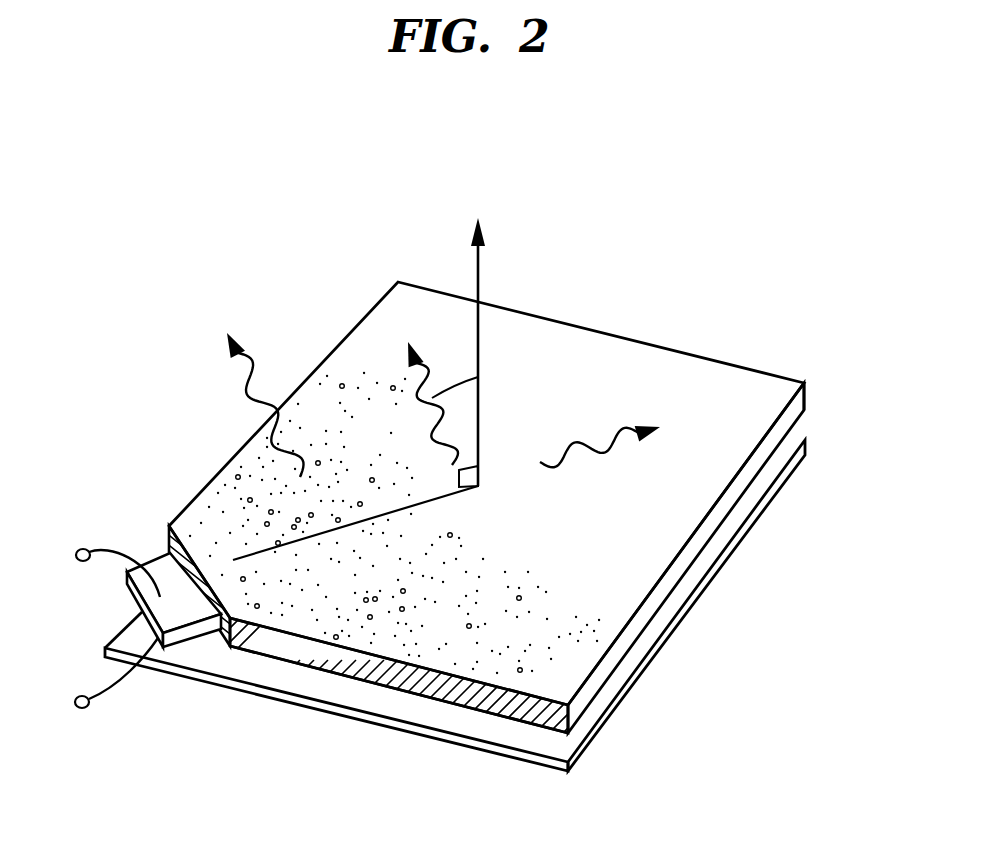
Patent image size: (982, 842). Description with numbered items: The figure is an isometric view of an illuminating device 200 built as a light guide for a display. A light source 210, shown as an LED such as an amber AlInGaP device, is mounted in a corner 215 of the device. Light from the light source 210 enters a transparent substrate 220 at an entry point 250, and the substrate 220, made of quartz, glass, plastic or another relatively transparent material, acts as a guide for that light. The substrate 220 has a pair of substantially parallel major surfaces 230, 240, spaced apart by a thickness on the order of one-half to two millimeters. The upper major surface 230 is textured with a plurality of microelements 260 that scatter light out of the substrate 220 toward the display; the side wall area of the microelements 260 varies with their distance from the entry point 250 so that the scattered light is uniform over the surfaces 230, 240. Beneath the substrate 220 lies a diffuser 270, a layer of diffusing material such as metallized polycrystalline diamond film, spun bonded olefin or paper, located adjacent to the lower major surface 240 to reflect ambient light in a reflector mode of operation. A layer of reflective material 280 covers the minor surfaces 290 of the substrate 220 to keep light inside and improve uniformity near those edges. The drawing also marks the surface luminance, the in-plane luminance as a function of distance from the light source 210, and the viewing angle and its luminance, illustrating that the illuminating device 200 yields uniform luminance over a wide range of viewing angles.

The illuminating device 200 is at (286, 243).
The light source 210 is at (183, 642).
The corner 215 is at (128, 594).
The transparent substrate 220 is at (566, 312).
The major surface 230 is at (547, 698).
The major surface 240 is at (533, 724).
The entry point 250 is at (168, 540).
The microelements 260 is at (247, 487).
The diffuser 270 is at (762, 510).
The layer of reflective material 280 is at (796, 416).
The minor surfaces 290 is at (810, 397).